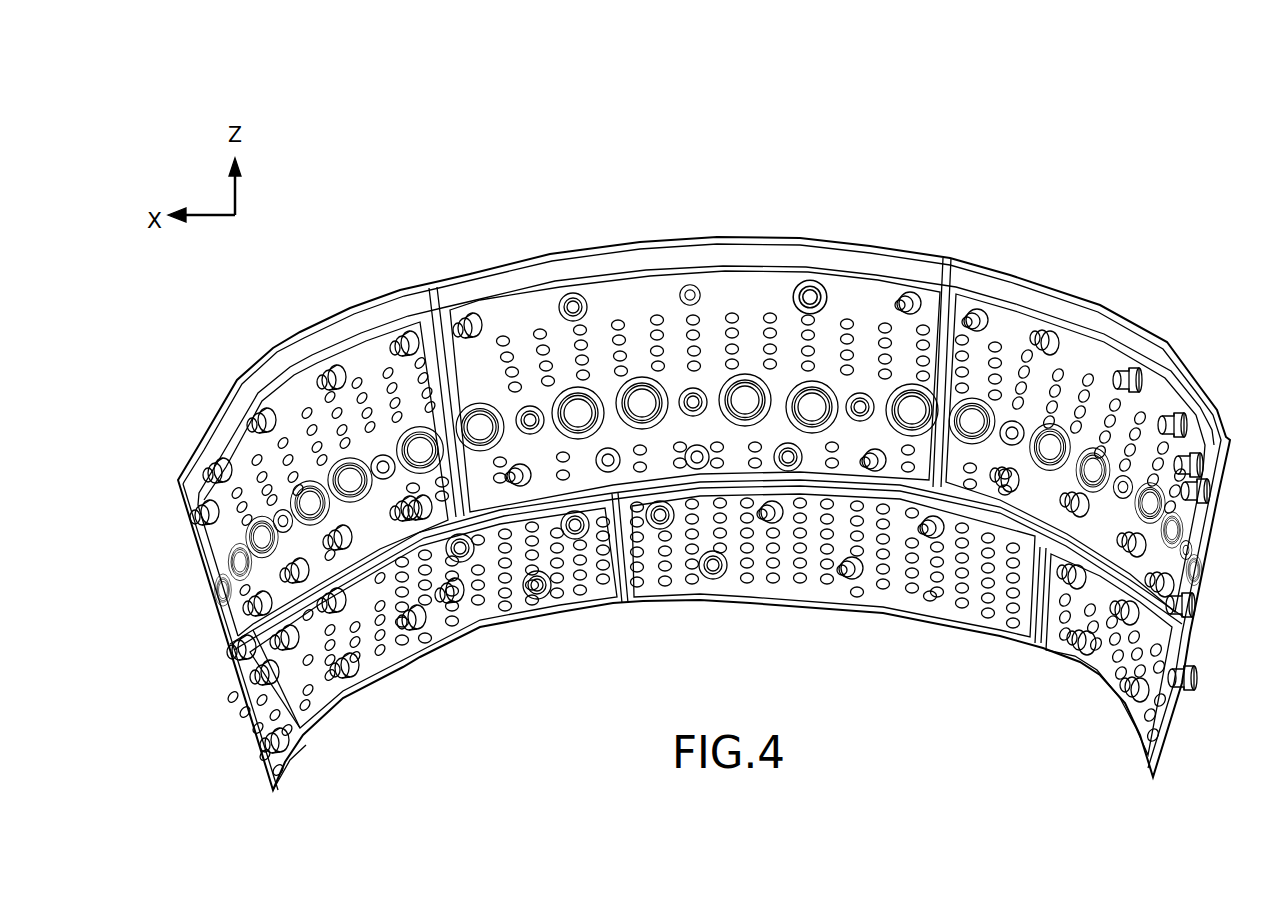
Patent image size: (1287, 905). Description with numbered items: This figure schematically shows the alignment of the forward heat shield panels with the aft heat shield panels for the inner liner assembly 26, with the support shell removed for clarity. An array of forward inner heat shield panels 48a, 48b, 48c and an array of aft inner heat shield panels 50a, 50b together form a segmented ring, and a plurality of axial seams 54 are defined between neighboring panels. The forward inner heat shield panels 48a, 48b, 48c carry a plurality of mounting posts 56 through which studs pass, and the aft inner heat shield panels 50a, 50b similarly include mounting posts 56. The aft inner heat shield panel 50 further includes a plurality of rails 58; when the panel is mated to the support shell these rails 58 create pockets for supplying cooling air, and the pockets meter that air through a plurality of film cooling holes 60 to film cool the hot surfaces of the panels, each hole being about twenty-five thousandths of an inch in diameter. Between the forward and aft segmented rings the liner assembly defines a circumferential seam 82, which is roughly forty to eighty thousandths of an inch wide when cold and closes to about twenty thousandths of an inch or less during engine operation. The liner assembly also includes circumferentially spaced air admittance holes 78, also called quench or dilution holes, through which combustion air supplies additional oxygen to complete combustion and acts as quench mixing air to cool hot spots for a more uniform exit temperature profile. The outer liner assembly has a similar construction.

The inner liner assembly 26 is at (1085, 150).
The forward inner heat shield panel 48a is at (337, 688).
The forward inner heat shield panel 48b is at (715, 586).
The forward inner heat shield panel 48c is at (1114, 672).
The aft inner heat shield panel 50 is at (587, 247).
The aft inner heat shield panel 50a is at (192, 422).
The aft inner heat shield panel 50b is at (1010, 280).
The axial seam 54 is at (432, 285).
The mounting post 56 is at (810, 292).
The rail 58 is at (860, 276).
The film cooling hole 60 is at (658, 316).
The air admittance hole 78 is at (745, 396).
The circumferential seam 82 is at (230, 698).